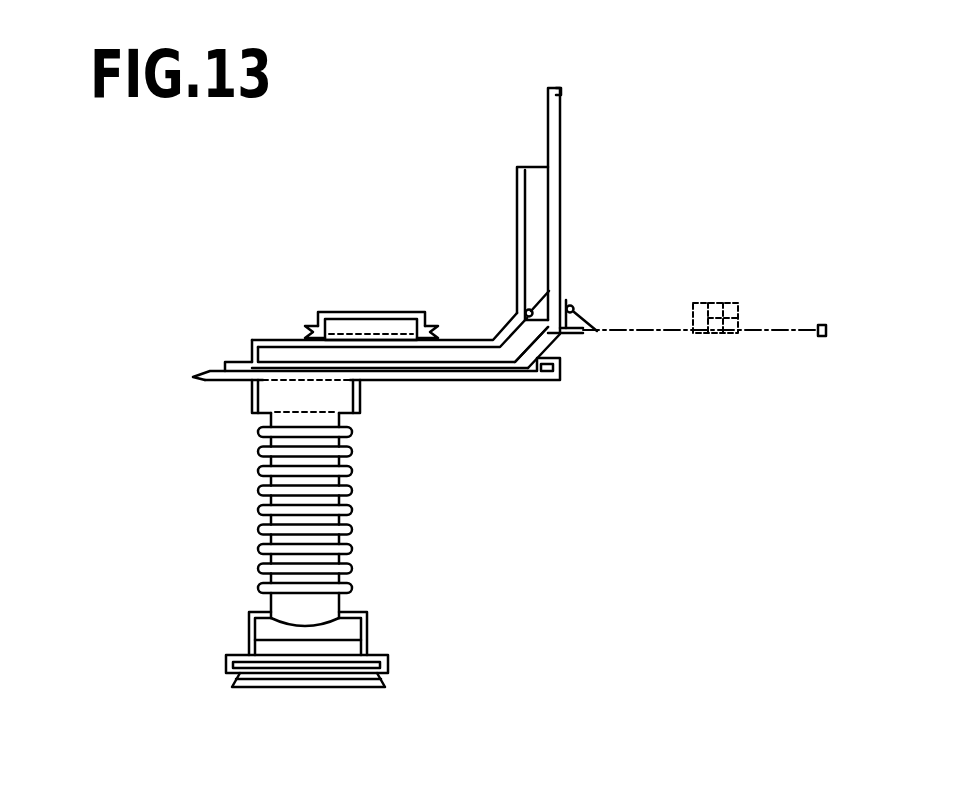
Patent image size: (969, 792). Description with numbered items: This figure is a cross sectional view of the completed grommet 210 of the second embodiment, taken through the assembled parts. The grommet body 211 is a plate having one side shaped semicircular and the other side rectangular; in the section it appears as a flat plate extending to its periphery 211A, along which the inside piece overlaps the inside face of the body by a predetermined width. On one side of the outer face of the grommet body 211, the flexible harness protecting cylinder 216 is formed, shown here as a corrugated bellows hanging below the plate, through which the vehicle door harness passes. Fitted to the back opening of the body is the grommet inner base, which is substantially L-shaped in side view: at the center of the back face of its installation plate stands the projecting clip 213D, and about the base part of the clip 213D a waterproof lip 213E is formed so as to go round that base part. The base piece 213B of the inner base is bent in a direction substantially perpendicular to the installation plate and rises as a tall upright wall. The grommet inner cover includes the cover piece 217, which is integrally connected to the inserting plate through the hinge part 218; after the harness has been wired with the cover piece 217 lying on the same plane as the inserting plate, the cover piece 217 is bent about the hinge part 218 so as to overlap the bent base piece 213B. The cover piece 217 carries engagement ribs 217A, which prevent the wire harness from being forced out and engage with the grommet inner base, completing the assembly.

The grommet 210 is at (344, 298).
The grommet body 211 is at (460, 392).
The periphery 211A is at (205, 373).
The base piece 213B is at (517, 213).
The projecting clip 213D is at (400, 312).
The waterproof lip 213E is at (313, 330).
The flexible harness protecting cylinder 216 is at (352, 527).
The cover piece 217 is at (653, 333).
The engagement ribs 217A is at (720, 305).
The hinge part 218 is at (557, 348).